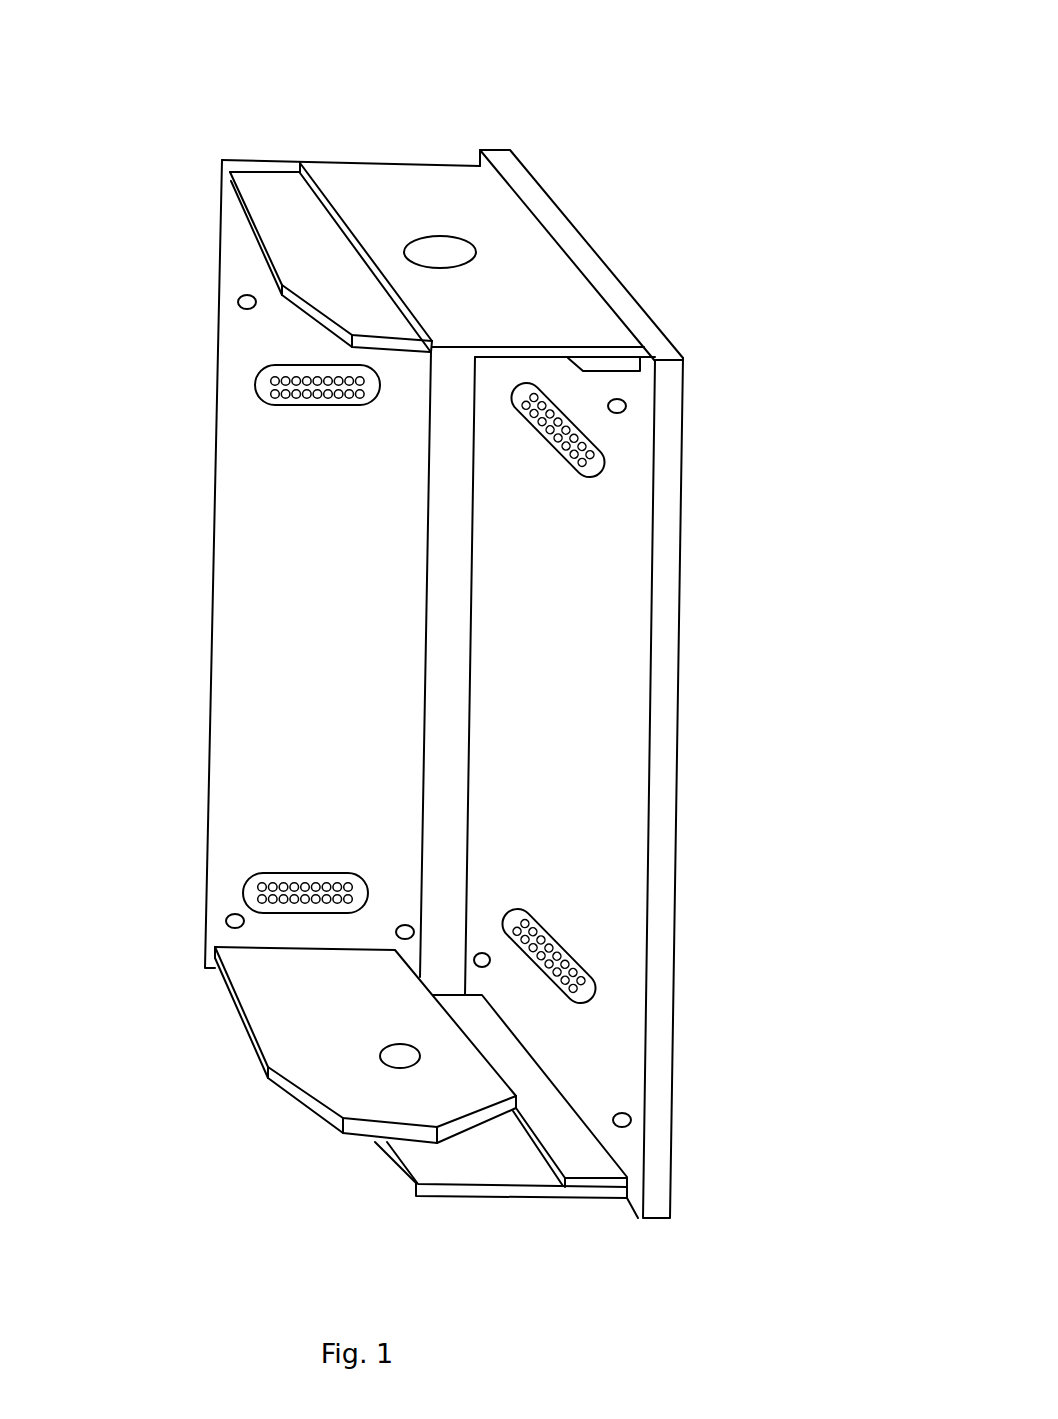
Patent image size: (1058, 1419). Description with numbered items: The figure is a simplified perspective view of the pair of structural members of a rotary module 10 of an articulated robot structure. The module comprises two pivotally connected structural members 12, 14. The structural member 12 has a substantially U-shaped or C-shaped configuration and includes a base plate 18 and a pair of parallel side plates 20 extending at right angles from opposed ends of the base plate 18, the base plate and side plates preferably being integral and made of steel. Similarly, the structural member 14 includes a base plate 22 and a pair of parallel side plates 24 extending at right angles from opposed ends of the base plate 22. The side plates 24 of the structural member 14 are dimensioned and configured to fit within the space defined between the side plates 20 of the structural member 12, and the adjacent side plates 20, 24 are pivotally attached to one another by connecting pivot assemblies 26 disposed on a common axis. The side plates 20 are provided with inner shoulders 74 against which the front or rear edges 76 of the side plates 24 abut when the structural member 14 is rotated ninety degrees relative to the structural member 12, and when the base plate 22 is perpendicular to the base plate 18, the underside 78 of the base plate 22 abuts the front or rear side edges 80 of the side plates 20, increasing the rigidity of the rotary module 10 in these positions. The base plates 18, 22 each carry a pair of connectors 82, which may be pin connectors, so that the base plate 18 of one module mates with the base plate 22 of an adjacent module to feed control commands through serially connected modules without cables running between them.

The rotary module 10 is at (760, 1229).
The structural member 12 is at (721, 797).
The structural member 14 is at (162, 345).
The base plate 18 is at (622, 583).
The side plates 20 is at (520, 237).
The base plate 22 is at (238, 713).
The side plates 24 is at (287, 207).
The connecting pivot assemblies 26 is at (446, 254).
The inner shoulders 74 is at (583, 372).
The front or rear edges 76 is at (252, 233).
The underside 78 is at (264, 611).
The front or rear side edges 80 is at (512, 352).
The connectors 82 is at (300, 393).